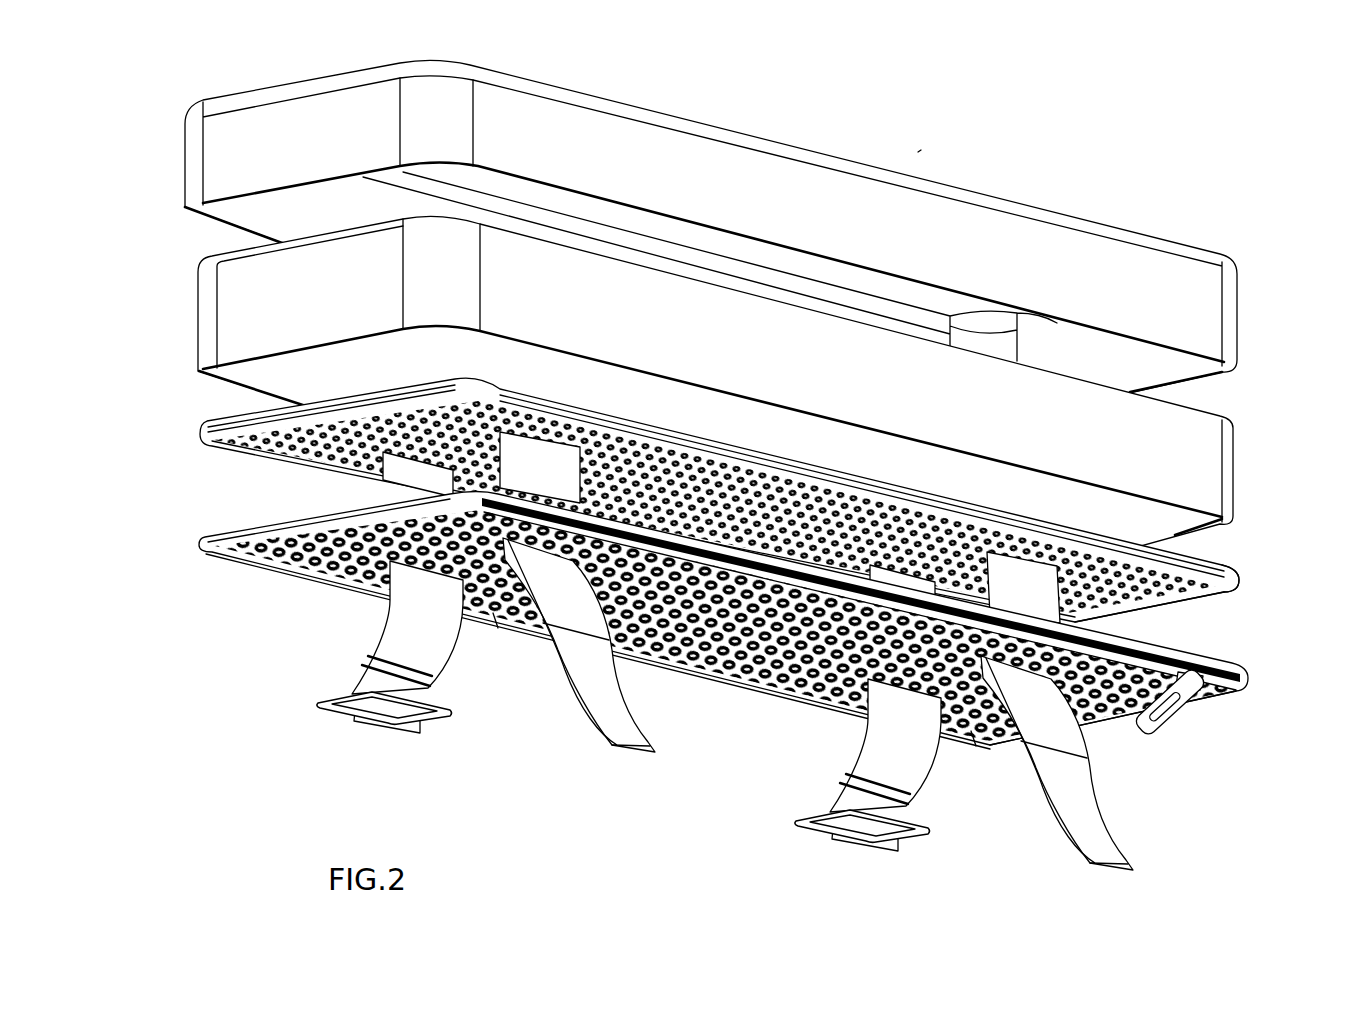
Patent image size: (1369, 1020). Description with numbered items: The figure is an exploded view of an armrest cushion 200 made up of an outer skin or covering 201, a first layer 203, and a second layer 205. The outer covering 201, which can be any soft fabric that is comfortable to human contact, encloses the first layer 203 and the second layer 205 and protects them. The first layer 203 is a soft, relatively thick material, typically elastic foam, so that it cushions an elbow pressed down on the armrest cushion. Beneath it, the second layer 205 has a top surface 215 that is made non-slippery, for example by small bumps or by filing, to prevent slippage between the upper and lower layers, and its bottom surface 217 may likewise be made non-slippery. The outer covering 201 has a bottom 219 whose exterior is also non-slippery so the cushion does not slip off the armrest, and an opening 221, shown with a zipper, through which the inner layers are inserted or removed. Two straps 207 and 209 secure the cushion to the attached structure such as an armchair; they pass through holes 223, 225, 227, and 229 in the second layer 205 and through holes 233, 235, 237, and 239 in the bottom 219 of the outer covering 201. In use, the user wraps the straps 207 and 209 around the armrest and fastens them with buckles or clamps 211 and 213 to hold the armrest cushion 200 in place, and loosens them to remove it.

The armrest cushion 200 is at (928, 147).
The outer skin or covering 201 is at (186, 187).
The first layer 203 is at (204, 300).
The second layer 205 is at (205, 428).
The strap 207 is at (563, 717).
The strap 209 is at (1083, 814).
The buckle or clamp 211 is at (325, 713).
The buckle or clamp 213 is at (796, 832).
The top surface of the second layer 215 is at (1207, 560).
The bottom surface of the second layer 217 is at (1162, 597).
The bottom of the outer covering 219 is at (264, 567).
The opening 221 is at (1197, 667).
The hole 223 is at (390, 453).
The hole 225 is at (500, 432).
The hole 227 is at (870, 565).
The hole 229 is at (963, 563).
The hole 233 is at (493, 613).
The hole 235 is at (360, 587).
The hole 237 is at (977, 740).
The hole 239 is at (828, 715).